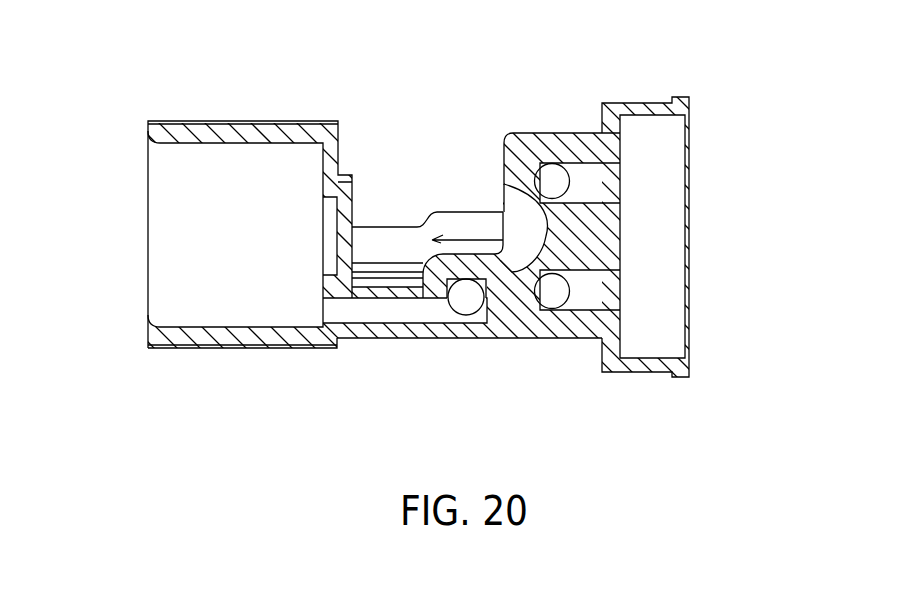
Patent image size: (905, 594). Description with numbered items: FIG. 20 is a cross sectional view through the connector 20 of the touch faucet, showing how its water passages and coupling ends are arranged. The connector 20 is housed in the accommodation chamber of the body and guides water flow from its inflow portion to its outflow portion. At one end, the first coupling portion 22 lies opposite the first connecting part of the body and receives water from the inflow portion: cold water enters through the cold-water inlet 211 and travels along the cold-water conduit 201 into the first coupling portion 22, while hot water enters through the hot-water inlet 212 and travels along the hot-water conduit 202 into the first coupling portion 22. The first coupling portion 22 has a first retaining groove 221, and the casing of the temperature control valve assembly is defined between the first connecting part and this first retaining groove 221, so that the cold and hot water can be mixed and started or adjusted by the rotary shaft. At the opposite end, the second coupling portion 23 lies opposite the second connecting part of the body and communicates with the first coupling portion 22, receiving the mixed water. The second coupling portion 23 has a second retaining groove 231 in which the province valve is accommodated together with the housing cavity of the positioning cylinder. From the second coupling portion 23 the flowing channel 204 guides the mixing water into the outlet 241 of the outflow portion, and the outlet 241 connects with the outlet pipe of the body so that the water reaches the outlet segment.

The connector 20 is at (422, 123).
The hot-water conduit 202 is at (590, 186).
The hot-water inlet 212 is at (552, 180).
The cold-water conduit 201 is at (583, 294).
The cold-water inlet 211 is at (553, 293).
The outlet 241 is at (465, 301).
The flowing channel 204 is at (392, 315).
The second coupling portion 23 is at (238, 122).
The second retaining groove 231 is at (173, 205).
The first coupling portion 22 is at (641, 100).
The first retaining groove 221 is at (671, 217).